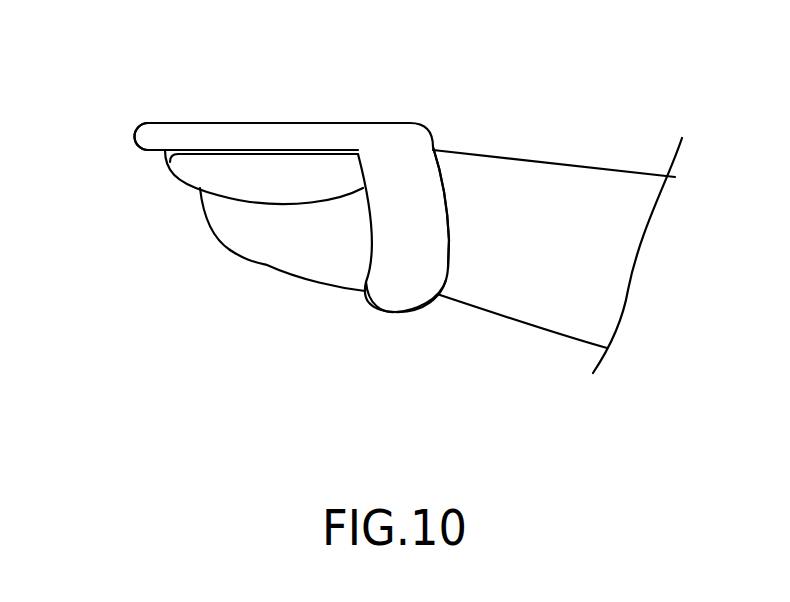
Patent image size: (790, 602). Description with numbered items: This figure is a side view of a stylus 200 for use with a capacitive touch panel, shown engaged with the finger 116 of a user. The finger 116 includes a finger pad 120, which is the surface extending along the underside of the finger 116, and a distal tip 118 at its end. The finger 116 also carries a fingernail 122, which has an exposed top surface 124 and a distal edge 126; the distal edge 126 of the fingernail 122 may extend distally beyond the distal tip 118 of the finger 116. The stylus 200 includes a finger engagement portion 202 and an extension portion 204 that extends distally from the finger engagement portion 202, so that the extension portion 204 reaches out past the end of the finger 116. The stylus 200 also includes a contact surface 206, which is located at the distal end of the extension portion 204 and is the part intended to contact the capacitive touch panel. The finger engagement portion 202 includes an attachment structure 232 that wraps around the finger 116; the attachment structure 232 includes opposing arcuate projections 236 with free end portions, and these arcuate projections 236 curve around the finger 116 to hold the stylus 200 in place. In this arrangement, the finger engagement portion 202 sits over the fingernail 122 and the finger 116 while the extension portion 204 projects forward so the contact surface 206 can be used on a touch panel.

The finger 116 is at (512, 298).
The distal tip 118 is at (210, 232).
The finger pad 120 is at (268, 265).
The fingernail 122 is at (228, 167).
The exposed top surface 124 is at (285, 152).
The distal edge 126 is at (165, 152).
The stylus 200 is at (435, 72).
The finger engagement portion 202 is at (375, 354).
The extension portion 204 is at (150, 90).
The contact surface 206 is at (136, 137).
The attachment structure 232 is at (485, 214).
The arcuate projections 236 is at (413, 208).